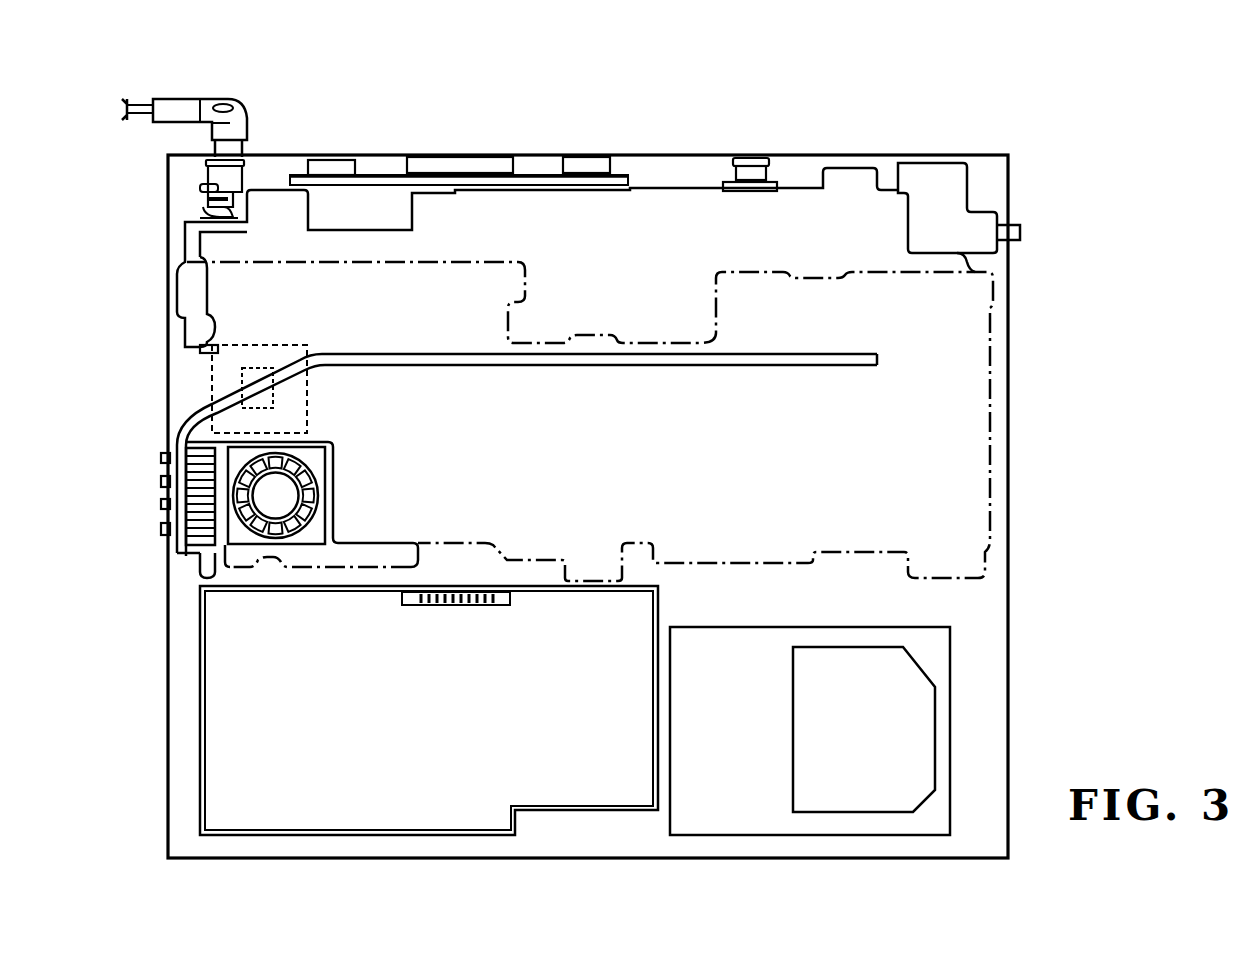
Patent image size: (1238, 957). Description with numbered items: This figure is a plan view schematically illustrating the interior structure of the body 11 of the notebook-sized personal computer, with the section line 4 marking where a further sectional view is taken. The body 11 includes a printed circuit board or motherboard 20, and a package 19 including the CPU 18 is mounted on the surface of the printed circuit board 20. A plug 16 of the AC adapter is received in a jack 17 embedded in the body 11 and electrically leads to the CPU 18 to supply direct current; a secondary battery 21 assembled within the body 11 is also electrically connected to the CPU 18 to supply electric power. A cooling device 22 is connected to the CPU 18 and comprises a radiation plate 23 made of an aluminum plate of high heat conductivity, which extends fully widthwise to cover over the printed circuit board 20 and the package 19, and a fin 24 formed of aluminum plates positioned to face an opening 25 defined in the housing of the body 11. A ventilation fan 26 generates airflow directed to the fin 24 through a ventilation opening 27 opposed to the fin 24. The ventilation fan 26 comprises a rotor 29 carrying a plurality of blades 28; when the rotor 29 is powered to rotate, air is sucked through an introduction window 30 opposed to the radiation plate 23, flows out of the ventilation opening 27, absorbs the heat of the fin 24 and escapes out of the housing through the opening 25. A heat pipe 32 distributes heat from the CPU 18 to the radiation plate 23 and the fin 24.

The section line 4- 4 is at (261, 44).
The body 11 is at (168, 758).
The plug 16 is at (247, 123).
The jack 17 is at (233, 177).
The CPU 18 is at (273, 397).
The package 19 is at (271, 345).
The printed circuit board 20 is at (185, 285).
The secondary battery 21 is at (439, 700).
The cooling device 22 is at (147, 416).
The radiation plate 23 is at (530, 283).
The fin 24 is at (200, 563).
The opening 25 is at (157, 501).
The ventilation fan 26 is at (308, 523).
The ventilation opening 27 is at (228, 527).
The blades 28 is at (296, 465).
The rotor 29 is at (286, 491).
The introduction window 30 is at (306, 511).
The heat pipe 32 is at (357, 355).